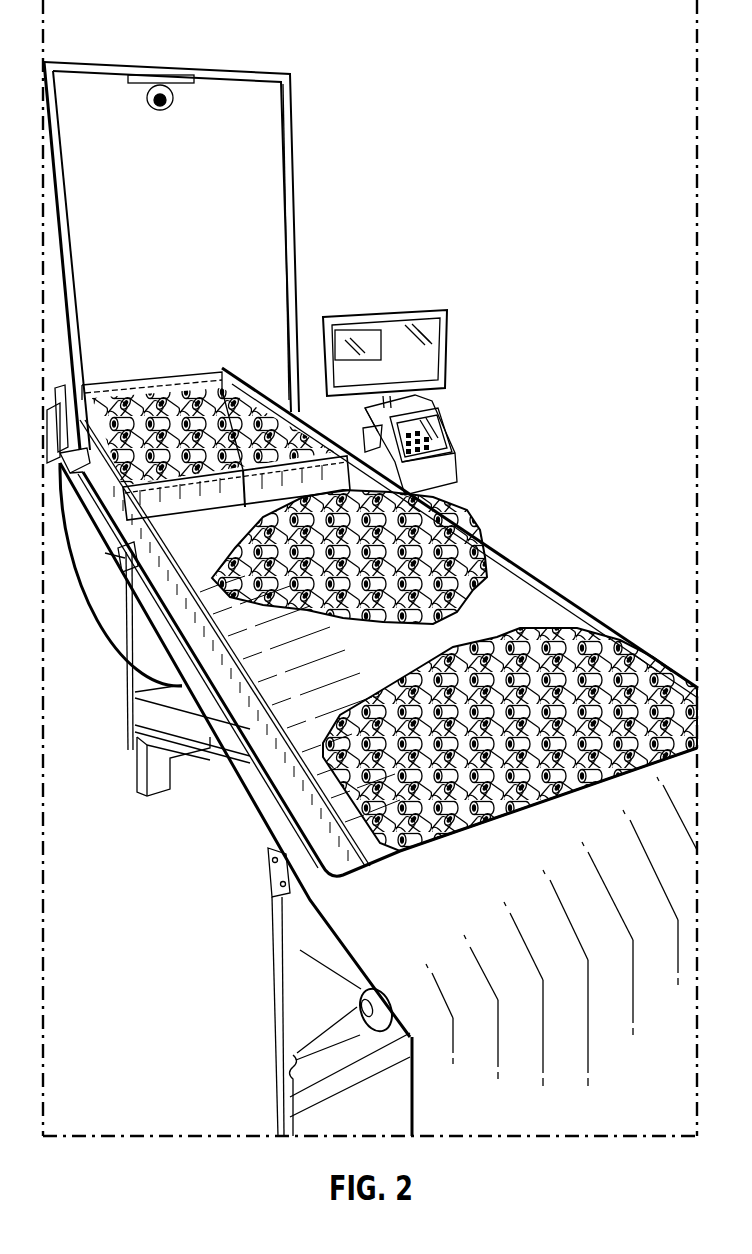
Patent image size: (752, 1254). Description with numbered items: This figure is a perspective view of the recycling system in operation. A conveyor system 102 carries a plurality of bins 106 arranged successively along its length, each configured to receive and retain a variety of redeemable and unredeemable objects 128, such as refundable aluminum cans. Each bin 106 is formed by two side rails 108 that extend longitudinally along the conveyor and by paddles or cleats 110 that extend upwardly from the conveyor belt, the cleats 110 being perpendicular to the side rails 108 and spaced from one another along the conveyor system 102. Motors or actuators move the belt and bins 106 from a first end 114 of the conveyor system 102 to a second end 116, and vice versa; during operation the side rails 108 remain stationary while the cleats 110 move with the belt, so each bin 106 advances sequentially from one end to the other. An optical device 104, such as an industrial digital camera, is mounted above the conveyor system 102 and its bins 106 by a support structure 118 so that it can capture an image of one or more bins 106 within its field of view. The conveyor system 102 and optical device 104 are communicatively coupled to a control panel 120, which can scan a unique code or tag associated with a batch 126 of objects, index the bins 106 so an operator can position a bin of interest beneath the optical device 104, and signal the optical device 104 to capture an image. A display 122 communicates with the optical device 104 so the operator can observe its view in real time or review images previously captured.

The conveyor system 102 is at (243, 778).
The optical device 104 is at (160, 113).
The bin 106 is at (514, 585).
The side rail 108 is at (572, 620).
The cleat 110 is at (250, 345).
The first end 114 is at (318, 968).
The second end 116 is at (92, 387).
The support structure 118 is at (292, 204).
The control panel 120 is at (443, 419).
The display 122 is at (428, 306).
The batch 126 is at (182, 398).
The object 128 is at (160, 423).